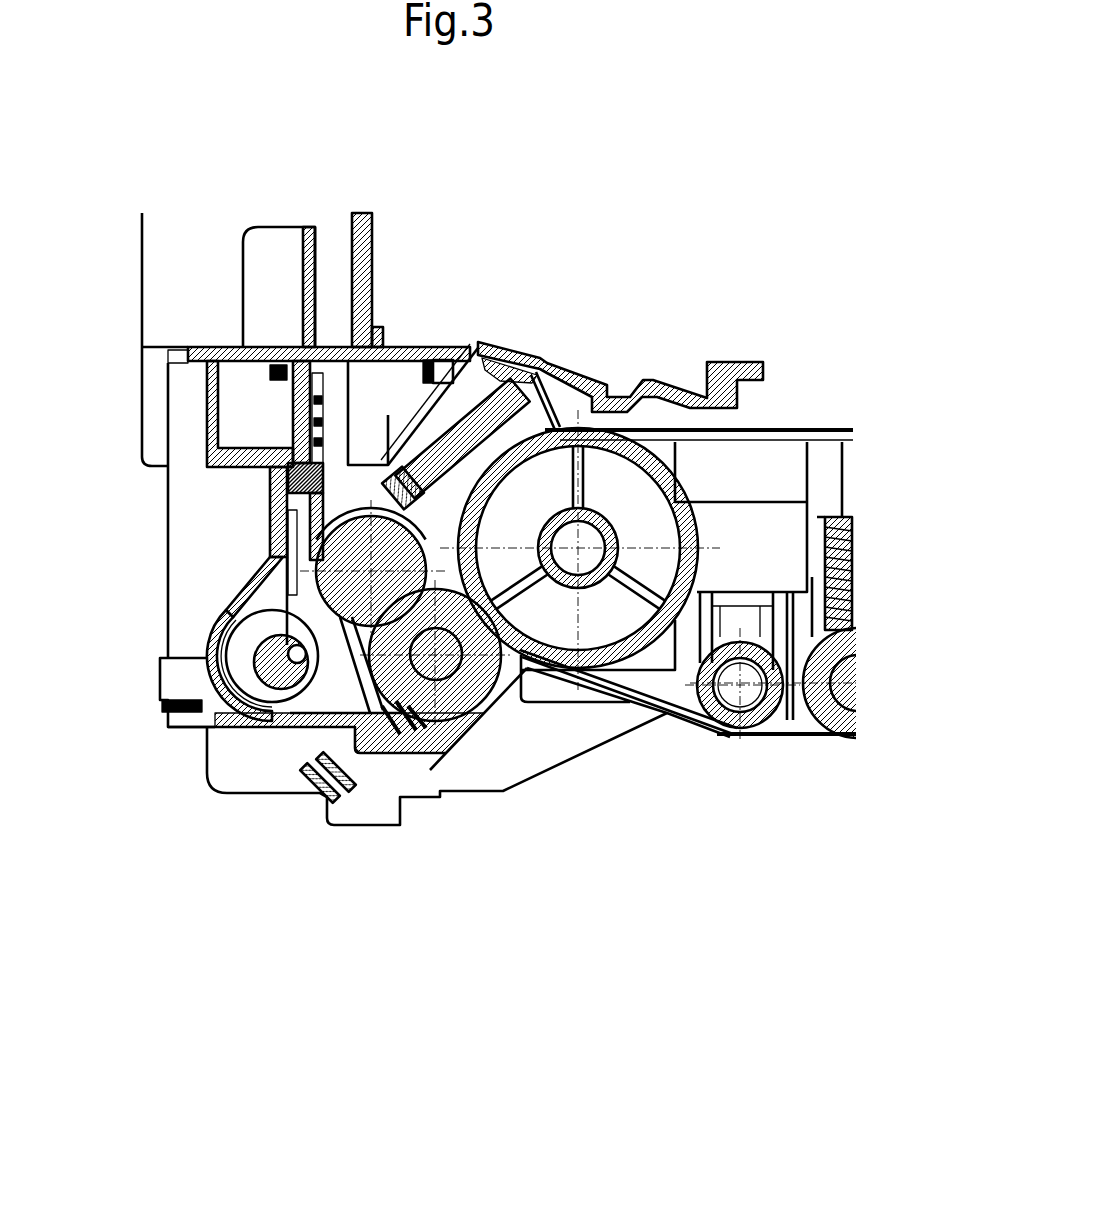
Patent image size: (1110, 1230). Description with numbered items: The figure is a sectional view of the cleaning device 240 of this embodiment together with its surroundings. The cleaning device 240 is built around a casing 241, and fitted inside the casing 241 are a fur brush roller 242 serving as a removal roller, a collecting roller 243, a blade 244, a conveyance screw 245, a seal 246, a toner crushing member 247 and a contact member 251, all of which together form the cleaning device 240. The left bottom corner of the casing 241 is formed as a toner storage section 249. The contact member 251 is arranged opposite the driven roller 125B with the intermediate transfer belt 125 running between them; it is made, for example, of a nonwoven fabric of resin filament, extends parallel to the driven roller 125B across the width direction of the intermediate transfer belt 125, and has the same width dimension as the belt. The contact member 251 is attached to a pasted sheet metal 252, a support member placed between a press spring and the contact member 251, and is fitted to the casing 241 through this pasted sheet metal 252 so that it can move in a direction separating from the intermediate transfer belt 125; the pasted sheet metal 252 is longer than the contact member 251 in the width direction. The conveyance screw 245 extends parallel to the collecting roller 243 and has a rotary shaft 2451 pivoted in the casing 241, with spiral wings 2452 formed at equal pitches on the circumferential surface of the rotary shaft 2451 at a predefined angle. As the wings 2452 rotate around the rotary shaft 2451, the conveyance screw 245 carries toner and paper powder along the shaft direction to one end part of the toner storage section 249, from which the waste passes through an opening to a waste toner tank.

The cleaning device 240 is at (198, 973).
The casing 241 is at (267, 483).
The fur brush roller 242 is at (495, 697).
The collecting roller 243 is at (435, 450).
The blade 244 is at (396, 425).
The conveyance screw 245 is at (227, 635).
The rotary shaft 2451 is at (254, 660).
The wings 2452 is at (283, 703).
The seal 246 is at (345, 690).
The toner crushing member 247 is at (232, 604).
The toner storage section 249 is at (322, 790).
The contact member 251 is at (507, 417).
The pasted sheet metal 252 is at (468, 405).
The intermediate transfer belt 125 is at (793, 430).
The driven roller 125B is at (617, 493).